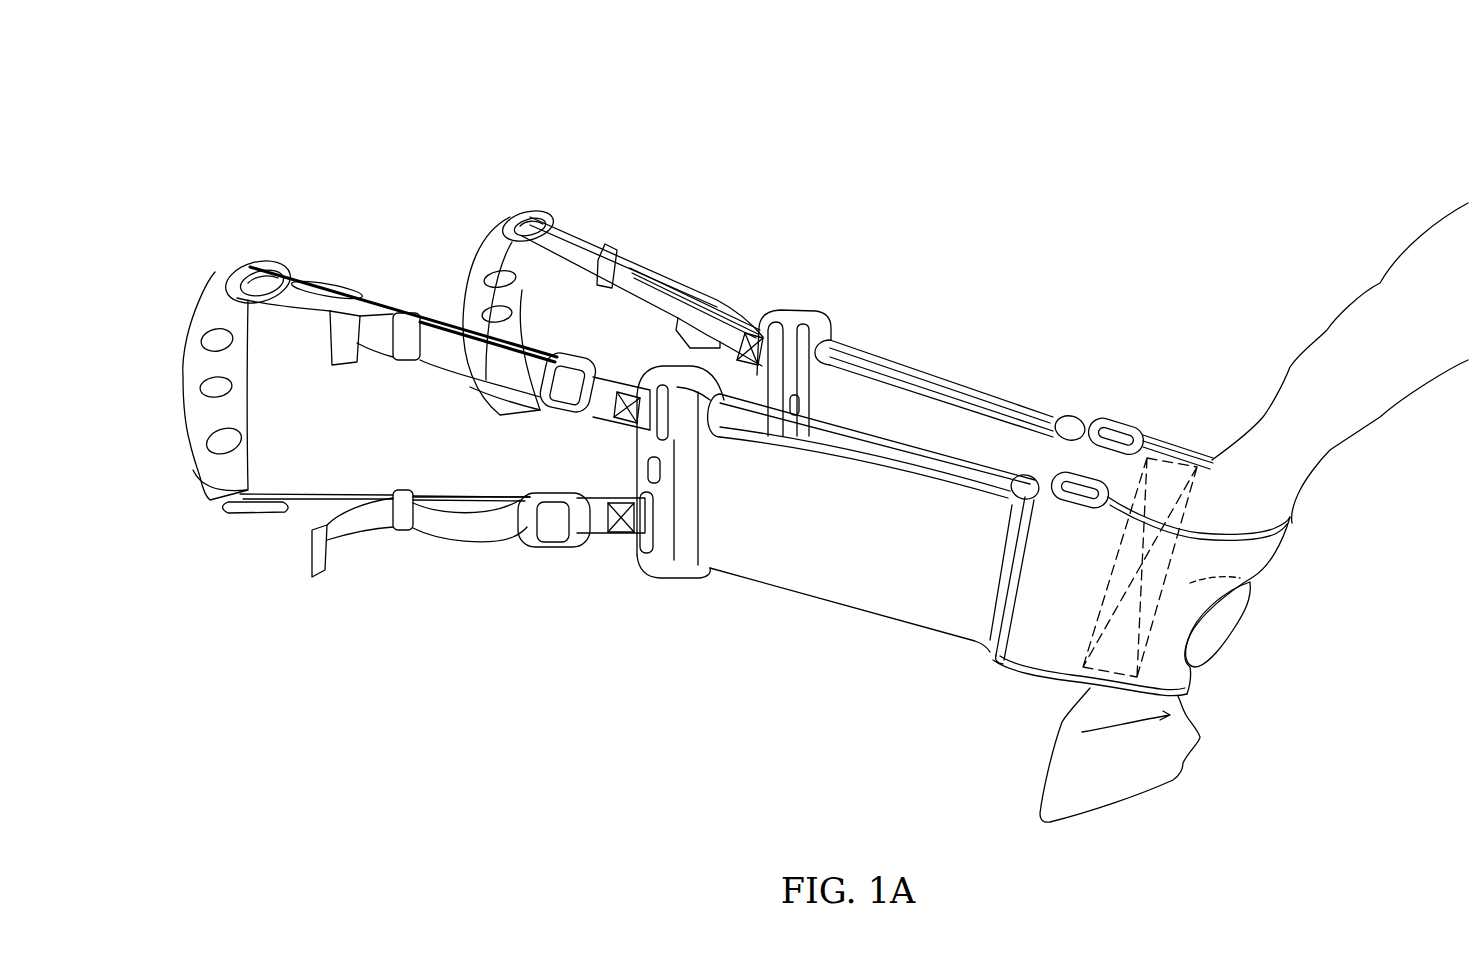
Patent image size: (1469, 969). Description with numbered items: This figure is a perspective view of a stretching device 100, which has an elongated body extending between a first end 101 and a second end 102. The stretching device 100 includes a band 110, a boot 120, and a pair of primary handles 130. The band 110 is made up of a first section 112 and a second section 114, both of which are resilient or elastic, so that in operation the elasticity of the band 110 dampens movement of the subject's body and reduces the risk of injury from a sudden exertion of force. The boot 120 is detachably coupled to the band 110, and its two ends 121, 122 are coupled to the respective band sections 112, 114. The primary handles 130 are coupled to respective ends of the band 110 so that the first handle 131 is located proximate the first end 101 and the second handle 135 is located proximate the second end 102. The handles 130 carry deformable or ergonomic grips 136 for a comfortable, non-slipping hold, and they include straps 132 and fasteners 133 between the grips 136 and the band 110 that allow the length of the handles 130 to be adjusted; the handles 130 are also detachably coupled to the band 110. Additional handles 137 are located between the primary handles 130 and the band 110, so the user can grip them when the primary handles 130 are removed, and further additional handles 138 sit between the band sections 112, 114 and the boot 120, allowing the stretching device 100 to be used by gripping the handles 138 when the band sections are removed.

The stretching device 100 is at (1007, 125).
The first end 101 is at (463, 258).
The second end 102 is at (187, 398).
The band 110 is at (902, 306).
The first section 112 is at (956, 402).
The second section 114 is at (803, 585).
The boot 120 is at (1267, 556).
The end 121 is at (1126, 391).
The end 122 is at (1019, 714).
The primary handles 130 is at (290, 200).
The first handle 131 is at (498, 247).
The straps 132 is at (626, 270).
The fasteners 133 is at (705, 295).
The second handle 135 is at (190, 338).
The grips 136 is at (477, 305).
The additional handles 137 is at (790, 318).
The additional handles 138 is at (1085, 432).